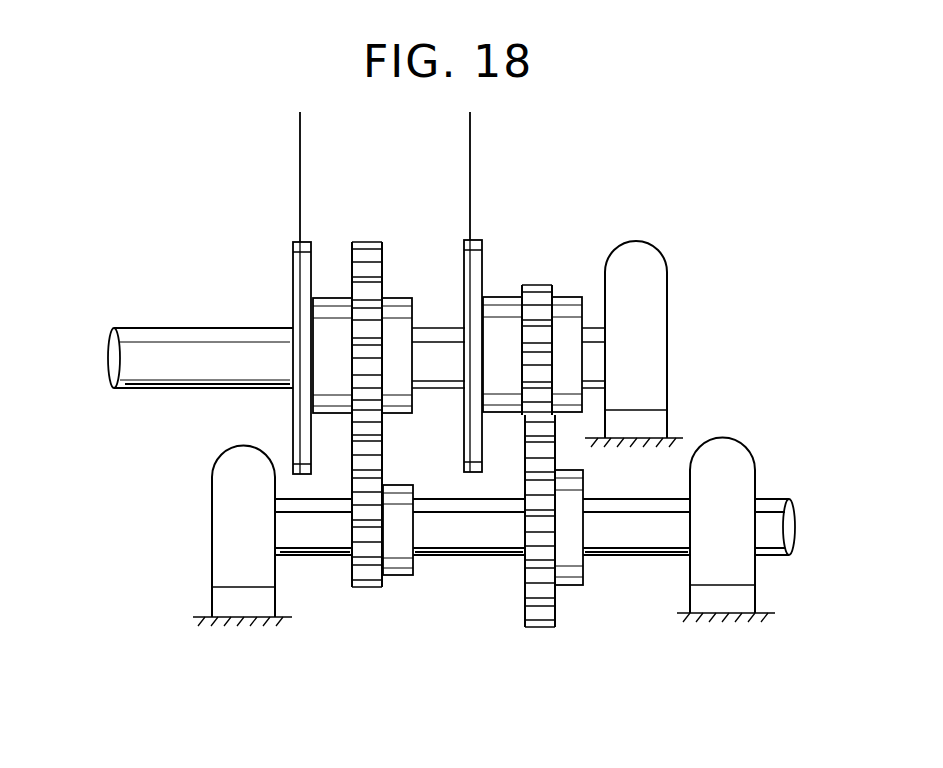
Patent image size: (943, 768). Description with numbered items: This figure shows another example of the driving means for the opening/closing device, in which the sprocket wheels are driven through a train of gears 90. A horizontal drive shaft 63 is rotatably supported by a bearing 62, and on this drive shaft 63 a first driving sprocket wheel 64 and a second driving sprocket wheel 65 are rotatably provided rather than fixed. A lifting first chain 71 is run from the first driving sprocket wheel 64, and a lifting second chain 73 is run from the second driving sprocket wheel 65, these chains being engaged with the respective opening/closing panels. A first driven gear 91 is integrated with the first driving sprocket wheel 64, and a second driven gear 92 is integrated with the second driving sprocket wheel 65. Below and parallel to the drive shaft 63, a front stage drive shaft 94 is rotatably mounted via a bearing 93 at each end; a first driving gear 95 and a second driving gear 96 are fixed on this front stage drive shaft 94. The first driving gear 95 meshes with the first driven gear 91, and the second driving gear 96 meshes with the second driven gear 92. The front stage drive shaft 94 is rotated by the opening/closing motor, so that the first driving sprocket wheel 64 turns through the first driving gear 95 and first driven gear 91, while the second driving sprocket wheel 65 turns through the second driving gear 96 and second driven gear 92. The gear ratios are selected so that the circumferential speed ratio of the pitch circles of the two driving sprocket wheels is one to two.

The bearing 62 is at (667, 265).
The drive shaft 63 is at (158, 328).
The first driving sprocket wheel 64 is at (482, 248).
The second driving sprocket wheel 65 is at (293, 260).
The lifting first chain 71 is at (470, 150).
The lifting second chain 73 is at (300, 147).
The train of gears 90 is at (487, 565).
The first driven gear 91 is at (535, 285).
The second driven gear 92 is at (370, 242).
The bearing 93 is at (212, 510).
The front stage drive shaft 94 is at (628, 557).
The first driving gear 95 is at (545, 628).
The second driving gear 96 is at (372, 590).